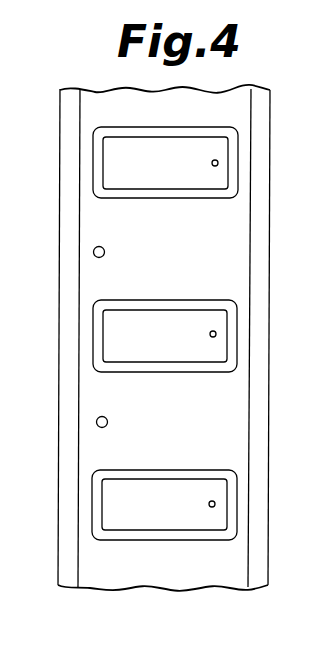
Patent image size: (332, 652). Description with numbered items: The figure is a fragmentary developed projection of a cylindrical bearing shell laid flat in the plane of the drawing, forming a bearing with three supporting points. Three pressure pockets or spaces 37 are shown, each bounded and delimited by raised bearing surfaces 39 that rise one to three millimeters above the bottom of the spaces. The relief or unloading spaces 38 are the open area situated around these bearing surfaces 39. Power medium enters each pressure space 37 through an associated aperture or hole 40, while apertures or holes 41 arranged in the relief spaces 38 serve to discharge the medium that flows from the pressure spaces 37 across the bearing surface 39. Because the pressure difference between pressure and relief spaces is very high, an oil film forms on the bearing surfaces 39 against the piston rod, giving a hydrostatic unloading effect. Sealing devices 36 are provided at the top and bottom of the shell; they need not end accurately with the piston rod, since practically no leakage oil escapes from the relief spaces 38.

The sealing devices 36 is at (258, 96).
The pressure pockets 37 is at (139, 517).
The relief spaces 38 is at (88, 452).
The raised bearing surfaces 39 is at (230, 522).
The aperture 40 is at (209, 163).
The apertures 41 is at (69, 250).